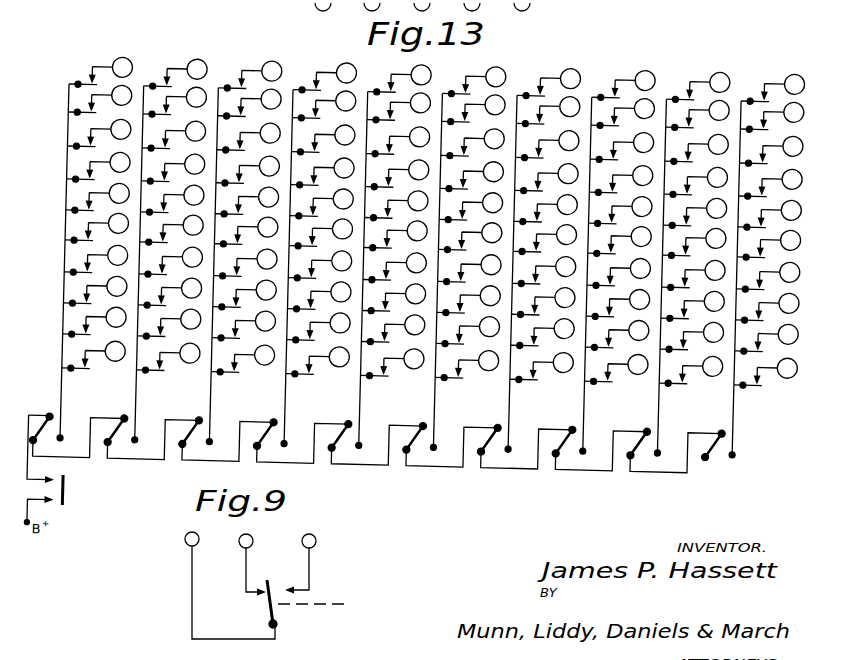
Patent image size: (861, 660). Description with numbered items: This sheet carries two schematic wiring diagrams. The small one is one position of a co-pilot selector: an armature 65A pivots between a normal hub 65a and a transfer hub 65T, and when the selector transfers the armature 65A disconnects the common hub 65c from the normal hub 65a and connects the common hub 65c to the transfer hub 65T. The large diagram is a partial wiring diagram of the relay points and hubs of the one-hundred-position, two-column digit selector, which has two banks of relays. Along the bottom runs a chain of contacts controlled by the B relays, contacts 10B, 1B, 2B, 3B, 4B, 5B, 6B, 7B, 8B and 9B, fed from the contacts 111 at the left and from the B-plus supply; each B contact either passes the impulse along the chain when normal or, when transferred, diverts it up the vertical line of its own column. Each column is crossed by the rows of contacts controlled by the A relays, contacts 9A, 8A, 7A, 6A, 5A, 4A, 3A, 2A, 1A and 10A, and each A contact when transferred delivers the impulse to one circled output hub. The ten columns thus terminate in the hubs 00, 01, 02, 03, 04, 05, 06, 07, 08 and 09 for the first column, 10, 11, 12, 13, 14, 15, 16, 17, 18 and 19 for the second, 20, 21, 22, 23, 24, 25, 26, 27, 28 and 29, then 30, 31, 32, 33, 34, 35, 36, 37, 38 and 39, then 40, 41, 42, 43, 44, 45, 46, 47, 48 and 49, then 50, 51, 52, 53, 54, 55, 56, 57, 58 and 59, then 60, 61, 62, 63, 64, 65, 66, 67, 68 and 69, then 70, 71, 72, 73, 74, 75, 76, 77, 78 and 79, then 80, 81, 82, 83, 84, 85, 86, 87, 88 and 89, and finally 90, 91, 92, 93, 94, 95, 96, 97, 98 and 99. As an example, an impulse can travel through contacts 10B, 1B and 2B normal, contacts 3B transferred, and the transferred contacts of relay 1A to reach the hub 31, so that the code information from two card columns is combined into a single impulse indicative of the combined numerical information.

In FIG. 13, the contacts 111 is at (5, 488).
In FIG. 9, the common hub 65c is at (186, 543).
In FIG. 9, the normal hub 65a is at (243, 547).
In FIG. 9, the transfer hub 65T is at (316, 541).
In FIG. 9, the armature 65A is at (277, 617).
In FIG. 13, the relay contacts 10B is at (76, 436).
In FIG. 13, the relay contacts 1B is at (152, 438).
In FIG. 13, the relay contacts 2B is at (226, 439).
In FIG. 13, the relay contacts 3B is at (301, 441).
In FIG. 13, the relay contacts 4B is at (376, 443).
In FIG. 13, the relay contacts 5B is at (450, 445).
In FIG. 13, the relay contacts 6B is at (525, 447).
In FIG. 13, the relay contacts 7B is at (600, 449).
In FIG. 13, the relay contacts 8B is at (674, 451).
In FIG. 13, the relay contacts 9B is at (725, 452).
In FIG. 13, the relay contacts 9A is at (48, 83).
In FIG. 13, the relay contacts 8A is at (47, 111).
In FIG. 13, the relay contacts 7A is at (46, 145).
In FIG. 13, the relay contacts 6A is at (45, 178).
In FIG. 13, the relay contacts 5A is at (45, 209).
In FIG. 13, the relay contacts 4A is at (44, 239).
In FIG. 13, the relay contacts 3A is at (43, 271).
In FIG. 13, the relay contacts 2A is at (42, 302).
In FIG. 13, the relay contacts 1A is at (41, 333).
In FIG. 13, the relay contacts 10A is at (38, 367).
In FIG. 13, the hub 00 is at (94, 356).
In FIG. 13, the hub 01 is at (95, 322).
In FIG. 13, the hub 02 is at (95, 291).
In FIG. 13, the hub 03 is at (96, 260).
In FIG. 13, the hub 04 is at (97, 228).
In FIG. 13, the hub 05 is at (98, 198).
In FIG. 13, the hub 06 is at (99, 167).
In FIG. 13, the hub 07 is at (99, 134).
In FIG. 13, the hub 08 is at (100, 100).
In FIG. 13, the hub 09 is at (101, 72).
In FIG. 13, the hub 10 is at (168, 358).
In FIG. 13, the hub 11 is at (169, 324).
In FIG. 13, the hub 12 is at (170, 293).
In FIG. 13, the hub 13 is at (171, 262).
In FIG. 13, the hub 14 is at (172, 230).
In FIG. 13, the hub 15 is at (172, 200).
In FIG. 13, the hub 16 is at (173, 169).
In FIG. 13, the hub 17 is at (174, 136).
In FIG. 13, the hub 18 is at (175, 102).
In FIG. 13, the hub 19 is at (176, 74).
In FIG. 13, the hub 20 is at (243, 360).
In FIG. 13, the hub 21 is at (244, 326).
In FIG. 13, the hub 22 is at (245, 295).
In FIG. 13, the hub 23 is at (246, 264).
In FIG. 13, the hub 24 is at (246, 232).
In FIG. 13, the hub 25 is at (247, 202).
In FIG. 13, the hub 26 is at (248, 171).
In FIG. 13, the hub 27 is at (249, 138).
In FIG. 13, the hub 28 is at (250, 104).
In FIG. 13, the hub 29 is at (250, 76).
In FIG. 13, the hub 30 is at (318, 362).
In FIG. 13, the hub 31 is at (319, 328).
In FIG. 13, the hub 32 is at (319, 297).
In FIG. 13, the hub 33 is at (320, 266).
In FIG. 13, the hub 34 is at (321, 234).
In FIG. 13, the hub 35 is at (322, 204).
In FIG. 13, the hub 36 is at (323, 173).
In FIG. 13, the hub 37 is at (323, 140).
In FIG. 13, the hub 38 is at (324, 106).
In FIG. 13, the hub 39 is at (325, 78).
In FIG. 13, the hub 40 is at (392, 363).
In FIG. 13, the hub 41 is at (393, 329).
In FIG. 13, the hub 42 is at (394, 298).
In FIG. 13, the hub 43 is at (395, 268).
In FIG. 13, the hub 44 is at (396, 236).
In FIG. 13, the hub 45 is at (396, 206).
In FIG. 13, the hub 46 is at (397, 175).
In FIG. 13, the hub 47 is at (398, 142).
In FIG. 13, the hub 48 is at (399, 108).
In FIG. 13, the hub 49 is at (400, 80).
In FIG. 13, the hub 50 is at (467, 365).
In FIG. 13, the hub 51 is at (468, 331).
In FIG. 13, the hub 52 is at (469, 300).
In FIG. 13, the hub 53 is at (470, 269).
In FIG. 13, the hub 54 is at (470, 237).
In FIG. 13, the hub 55 is at (471, 207).
In FIG. 13, the hub 56 is at (472, 176).
In FIG. 13, the hub 57 is at (473, 143).
In FIG. 13, the hub 58 is at (474, 109).
In FIG. 13, the hub 59 is at (474, 81).
In FIG. 13, the hub 60 is at (542, 367).
In FIG. 13, the hub 61 is at (543, 333).
In FIG. 13, the hub 62 is at (543, 302).
In FIG. 13, the hub 63 is at (544, 271).
In FIG. 13, the hub 64 is at (545, 239).
In FIG. 13, the hub 65 is at (546, 209).
In FIG. 13, the hub 66 is at (547, 178).
In FIG. 13, the hub 67 is at (547, 145).
In FIG. 13, the hub 68 is at (548, 111).
In FIG. 13, the hub 69 is at (549, 83).
In FIG. 13, the hub 70 is at (616, 369).
In FIG. 13, the hub 71 is at (617, 335).
In FIG. 13, the hub 72 is at (618, 304).
In FIG. 13, the hub 73 is at (619, 273).
In FIG. 13, the hub 74 is at (620, 241).
In FIG. 13, the hub 75 is at (620, 211).
In FIG. 13, the hub 76 is at (621, 180).
In FIG. 13, the hub 77 is at (622, 147).
In FIG. 13, the hub 78 is at (623, 113).
In FIG. 13, the hub 79 is at (624, 85).
In FIG. 13, the hub 80 is at (691, 371).
In FIG. 13, the hub 81 is at (692, 337).
In FIG. 13, the hub 82 is at (693, 306).
In FIG. 13, the hub 83 is at (694, 275).
In FIG. 13, the hub 84 is at (694, 243).
In FIG. 13, the hub 85 is at (695, 213).
In FIG. 13, the hub 86 is at (696, 182).
In FIG. 13, the hub 87 is at (697, 149).
In FIG. 13, the hub 88 is at (698, 115).
In FIG. 13, the hub 89 is at (698, 87).
In FIG. 13, the hub 90 is at (766, 373).
In FIG. 13, the hub 91 is at (767, 339).
In FIG. 13, the hub 92 is at (767, 308).
In FIG. 13, the hub 93 is at (768, 277).
In FIG. 13, the hub 94 is at (769, 245).
In FIG. 13, the hub 95 is at (770, 215).
In FIG. 13, the hub 96 is at (771, 184).
In FIG. 13, the hub 97 is at (771, 151).
In FIG. 13, the hub 98 is at (772, 117).
In FIG. 13, the hub 99 is at (773, 89).